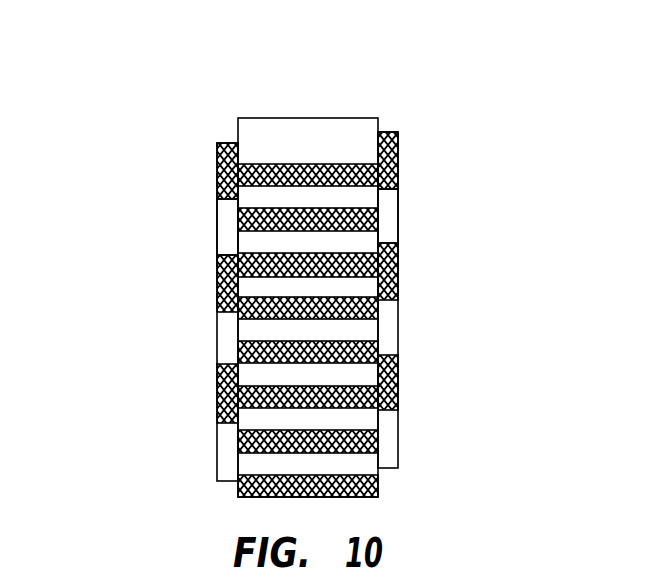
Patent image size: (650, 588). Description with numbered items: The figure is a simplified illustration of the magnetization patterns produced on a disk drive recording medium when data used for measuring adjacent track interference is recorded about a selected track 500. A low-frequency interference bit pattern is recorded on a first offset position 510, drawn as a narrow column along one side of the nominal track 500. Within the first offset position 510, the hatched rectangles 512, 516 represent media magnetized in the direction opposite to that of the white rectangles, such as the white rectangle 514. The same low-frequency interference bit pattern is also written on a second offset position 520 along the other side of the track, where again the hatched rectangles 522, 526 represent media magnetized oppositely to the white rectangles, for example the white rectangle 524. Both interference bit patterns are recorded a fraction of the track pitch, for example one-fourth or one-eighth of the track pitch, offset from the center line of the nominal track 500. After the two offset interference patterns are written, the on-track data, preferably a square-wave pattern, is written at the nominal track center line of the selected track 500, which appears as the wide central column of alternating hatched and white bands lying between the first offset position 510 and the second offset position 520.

The selected track 500 is at (307, 105).
The first offset position 510 is at (210, 125).
The hatched rectangle 512 is at (217, 183).
The white rectangle 514 is at (217, 227).
The hatched rectangle 516 is at (217, 278).
The second offset position 520 is at (405, 122).
The hatched rectangle 522 is at (398, 165).
The white rectangle 524 is at (398, 218).
The hatched rectangle 526 is at (398, 263).